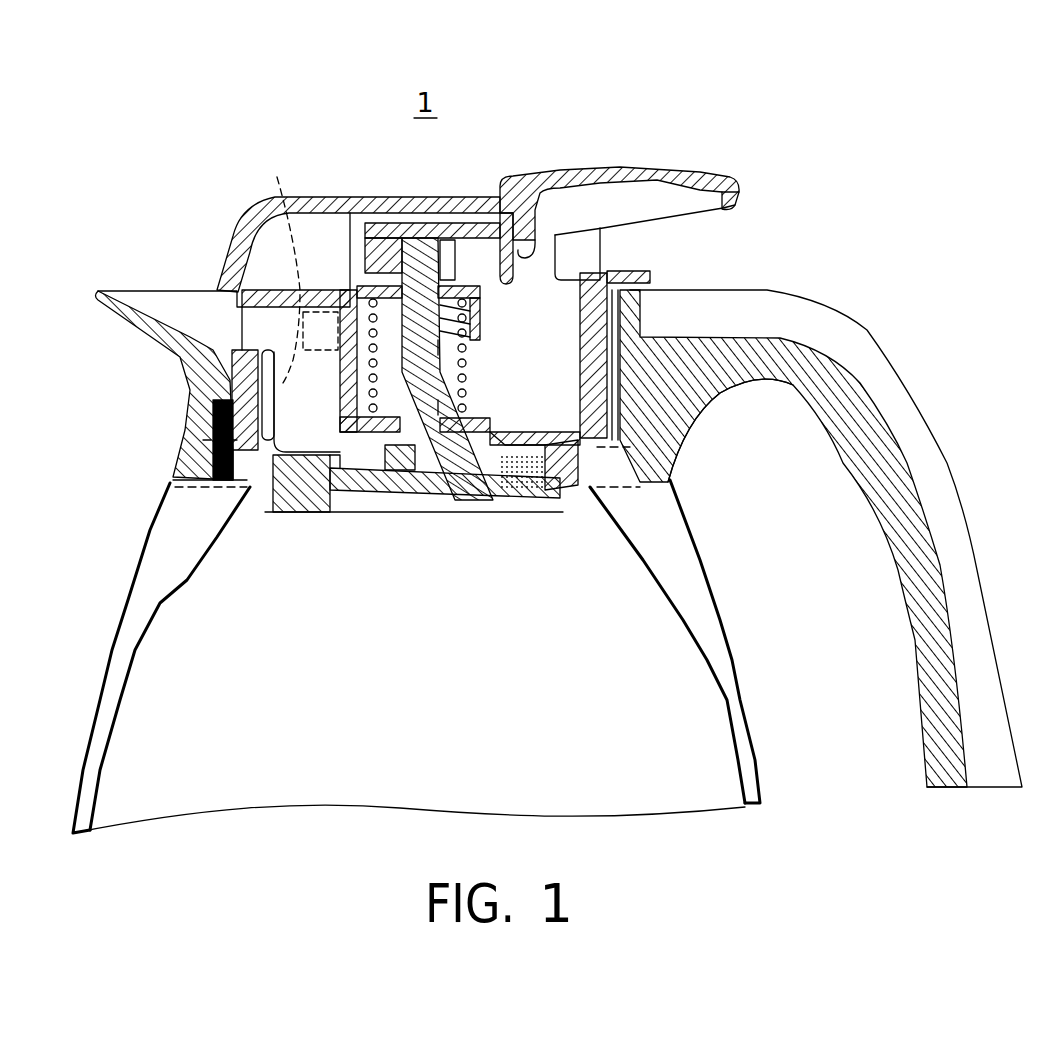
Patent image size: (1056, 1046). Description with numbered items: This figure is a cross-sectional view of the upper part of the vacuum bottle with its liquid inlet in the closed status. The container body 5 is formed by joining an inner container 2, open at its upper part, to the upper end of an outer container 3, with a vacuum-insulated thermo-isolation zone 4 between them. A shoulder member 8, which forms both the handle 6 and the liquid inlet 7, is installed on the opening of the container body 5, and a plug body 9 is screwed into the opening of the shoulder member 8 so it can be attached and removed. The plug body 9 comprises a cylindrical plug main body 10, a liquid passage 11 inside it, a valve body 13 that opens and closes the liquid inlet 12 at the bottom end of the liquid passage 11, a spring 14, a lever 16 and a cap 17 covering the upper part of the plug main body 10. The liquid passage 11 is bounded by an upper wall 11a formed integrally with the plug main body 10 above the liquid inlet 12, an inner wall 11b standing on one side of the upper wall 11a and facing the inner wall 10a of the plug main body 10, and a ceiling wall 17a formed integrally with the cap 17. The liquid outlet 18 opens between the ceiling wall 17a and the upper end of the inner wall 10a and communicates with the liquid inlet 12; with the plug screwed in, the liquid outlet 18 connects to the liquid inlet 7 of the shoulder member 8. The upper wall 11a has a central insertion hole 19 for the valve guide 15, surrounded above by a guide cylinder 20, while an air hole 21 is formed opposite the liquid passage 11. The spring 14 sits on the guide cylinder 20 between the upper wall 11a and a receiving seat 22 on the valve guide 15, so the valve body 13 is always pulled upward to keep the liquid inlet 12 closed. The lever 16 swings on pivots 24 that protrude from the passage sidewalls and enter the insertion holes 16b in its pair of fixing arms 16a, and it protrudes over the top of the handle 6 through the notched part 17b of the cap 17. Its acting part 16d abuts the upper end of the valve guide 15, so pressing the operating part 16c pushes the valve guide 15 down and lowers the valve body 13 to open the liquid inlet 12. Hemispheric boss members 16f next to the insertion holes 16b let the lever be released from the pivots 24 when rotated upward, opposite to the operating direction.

The inner container 2 is at (105, 707).
The outer container 3 is at (745, 705).
The thermo-isolation zone 4 is at (697, 598).
The container body 5 is at (100, 630).
The handle 6 is at (970, 578).
The liquid inlet 7 is at (140, 300).
The shoulder member 8 is at (688, 459).
The plug body 9 is at (222, 218).
The plug main body 10 is at (692, 412).
The inner wall of the plug main body 10a is at (228, 470).
The liquid passage 11 is at (268, 497).
The upper wall 11a is at (497, 453).
The inner wall 11b is at (337, 490).
The liquid inlet 12 is at (317, 500).
The valve body 13 is at (540, 505).
The spring 14 is at (466, 347).
The valve guide 15 is at (467, 408).
The lever 16 is at (686, 165).
The fixing arm 16a is at (280, 357).
The insertion hole 16b is at (322, 352).
The operating part 16c is at (740, 192).
The acting part 16d is at (428, 223).
The boss member 16f is at (376, 295).
The cap 17 is at (346, 193).
The ceiling wall 17a is at (325, 317).
The notched part 17b is at (541, 182).
The liquid outlet 18 is at (252, 333).
The insertion hole 19 is at (411, 450).
The guide cylinder 20 is at (467, 378).
The air hole 21 is at (528, 450).
The receiving seat 22 is at (480, 298).
The pivot 24 is at (279, 264).